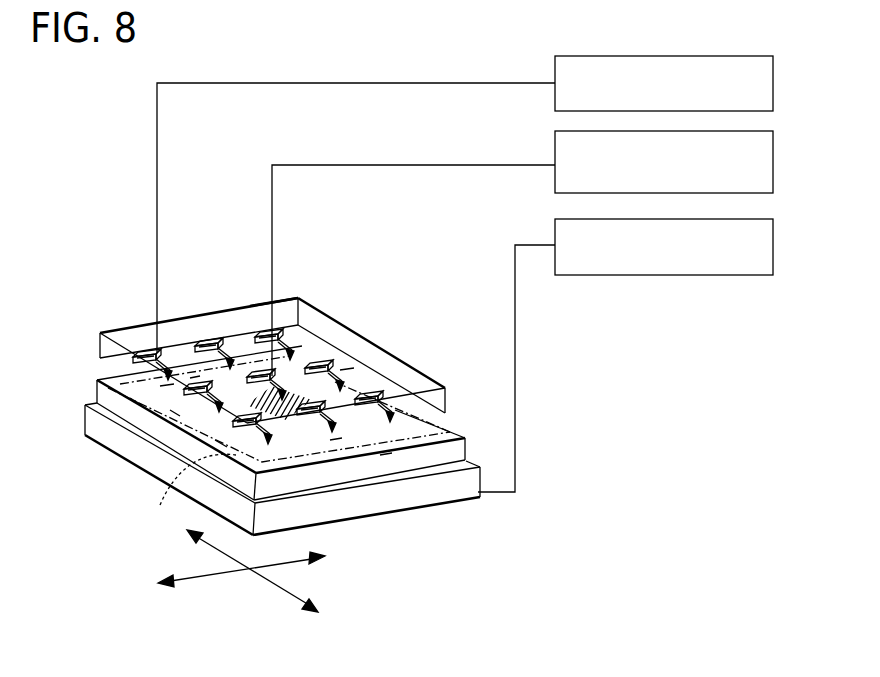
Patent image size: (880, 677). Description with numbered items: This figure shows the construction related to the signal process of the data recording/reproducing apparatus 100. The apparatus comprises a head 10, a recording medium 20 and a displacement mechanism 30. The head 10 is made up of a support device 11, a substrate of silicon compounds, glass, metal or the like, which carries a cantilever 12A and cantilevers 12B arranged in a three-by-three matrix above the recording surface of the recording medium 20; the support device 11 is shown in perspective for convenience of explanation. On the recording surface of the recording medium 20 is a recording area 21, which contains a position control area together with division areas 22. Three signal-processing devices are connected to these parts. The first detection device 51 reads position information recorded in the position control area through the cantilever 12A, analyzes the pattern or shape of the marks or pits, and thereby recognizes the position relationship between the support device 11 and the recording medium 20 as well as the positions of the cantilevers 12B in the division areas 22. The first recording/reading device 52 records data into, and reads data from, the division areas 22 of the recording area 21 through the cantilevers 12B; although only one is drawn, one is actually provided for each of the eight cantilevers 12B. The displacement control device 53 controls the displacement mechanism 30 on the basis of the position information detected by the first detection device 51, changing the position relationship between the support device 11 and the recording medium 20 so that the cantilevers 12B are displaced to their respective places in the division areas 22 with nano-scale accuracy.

The data recording/reproducing apparatus 100 is at (396, 58).
The head 10 is at (368, 328).
The support device 11 is at (318, 308).
The cantilever 12A is at (272, 384).
The cantilevers 12B is at (340, 373).
The recording medium 20 is at (455, 423).
The recording area 21 is at (184, 492).
The division areas 22 is at (174, 420).
The displacement mechanism 30 is at (466, 505).
The first detection device 51 is at (750, 132).
The first recording/reading device 52 is at (750, 57).
The displacement control device 53 is at (750, 220).